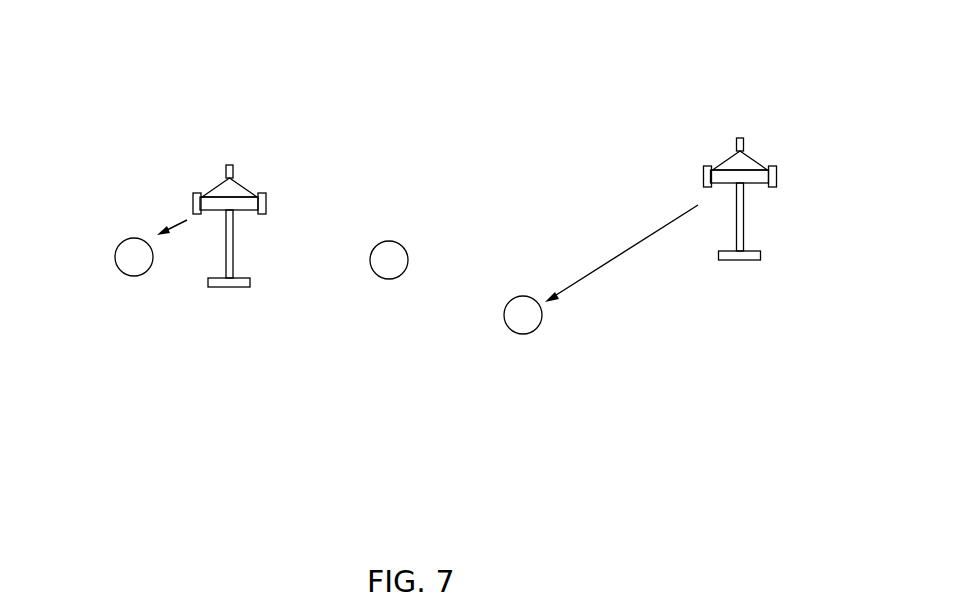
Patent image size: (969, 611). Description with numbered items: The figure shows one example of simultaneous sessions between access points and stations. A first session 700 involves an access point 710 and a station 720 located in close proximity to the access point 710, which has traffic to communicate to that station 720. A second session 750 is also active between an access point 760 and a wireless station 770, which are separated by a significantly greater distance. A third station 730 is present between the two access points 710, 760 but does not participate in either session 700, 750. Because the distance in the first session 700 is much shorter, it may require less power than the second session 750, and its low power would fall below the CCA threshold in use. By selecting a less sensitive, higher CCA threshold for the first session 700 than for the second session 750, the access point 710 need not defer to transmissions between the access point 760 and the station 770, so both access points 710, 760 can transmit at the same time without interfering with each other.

The first session 700 is at (128, 125).
The access point 710 is at (230, 164).
The station 720 is at (128, 237).
The third station 730 is at (385, 240).
The second session 750 is at (575, 122).
The access point 760 is at (736, 138).
The wireless station 770 is at (520, 295).